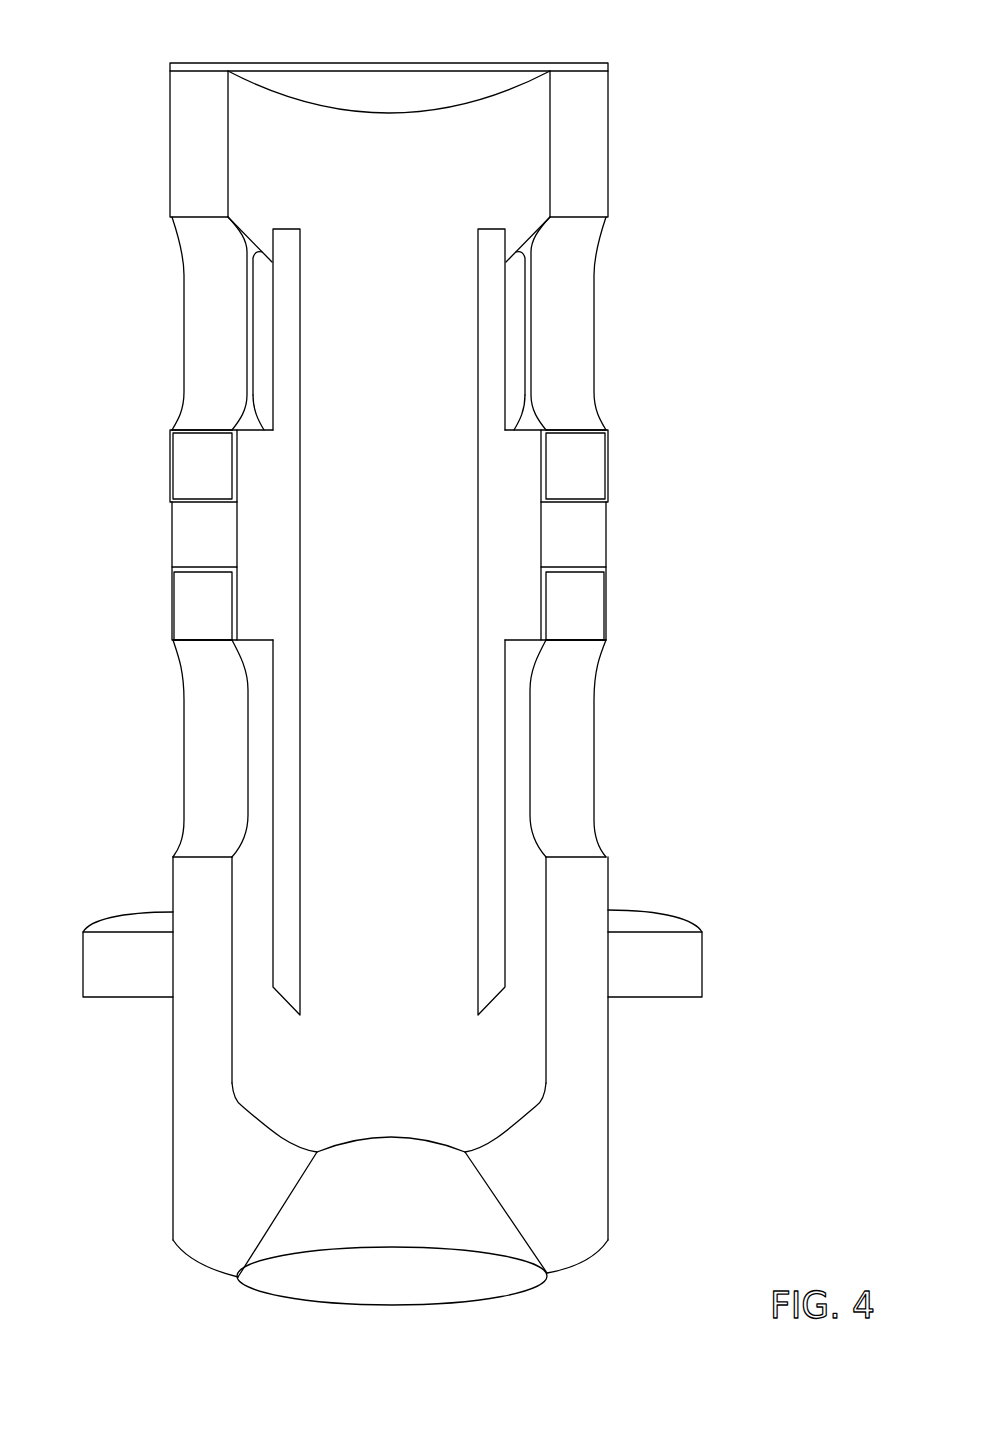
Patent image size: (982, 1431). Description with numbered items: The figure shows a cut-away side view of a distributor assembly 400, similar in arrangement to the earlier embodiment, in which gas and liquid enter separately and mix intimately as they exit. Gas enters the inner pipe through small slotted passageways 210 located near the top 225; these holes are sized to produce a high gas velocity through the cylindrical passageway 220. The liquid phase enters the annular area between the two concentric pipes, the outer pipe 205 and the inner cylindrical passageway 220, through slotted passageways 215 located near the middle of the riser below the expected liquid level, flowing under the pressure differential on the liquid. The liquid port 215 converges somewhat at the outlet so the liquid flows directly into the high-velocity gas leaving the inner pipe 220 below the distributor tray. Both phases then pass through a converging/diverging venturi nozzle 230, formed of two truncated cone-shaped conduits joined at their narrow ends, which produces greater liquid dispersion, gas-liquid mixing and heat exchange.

The micro-nozzle assembly 400 is at (73, 584).
The top 225 is at (423, 62).
The slotted passageway for gas 210 is at (203, 300).
The outer pipe 205 is at (187, 478).
The cylindrical passageway for gas 220 is at (488, 617).
The slotted passageway for liquid 215 is at (195, 738).
The venturi nozzle 230 is at (168, 1003).